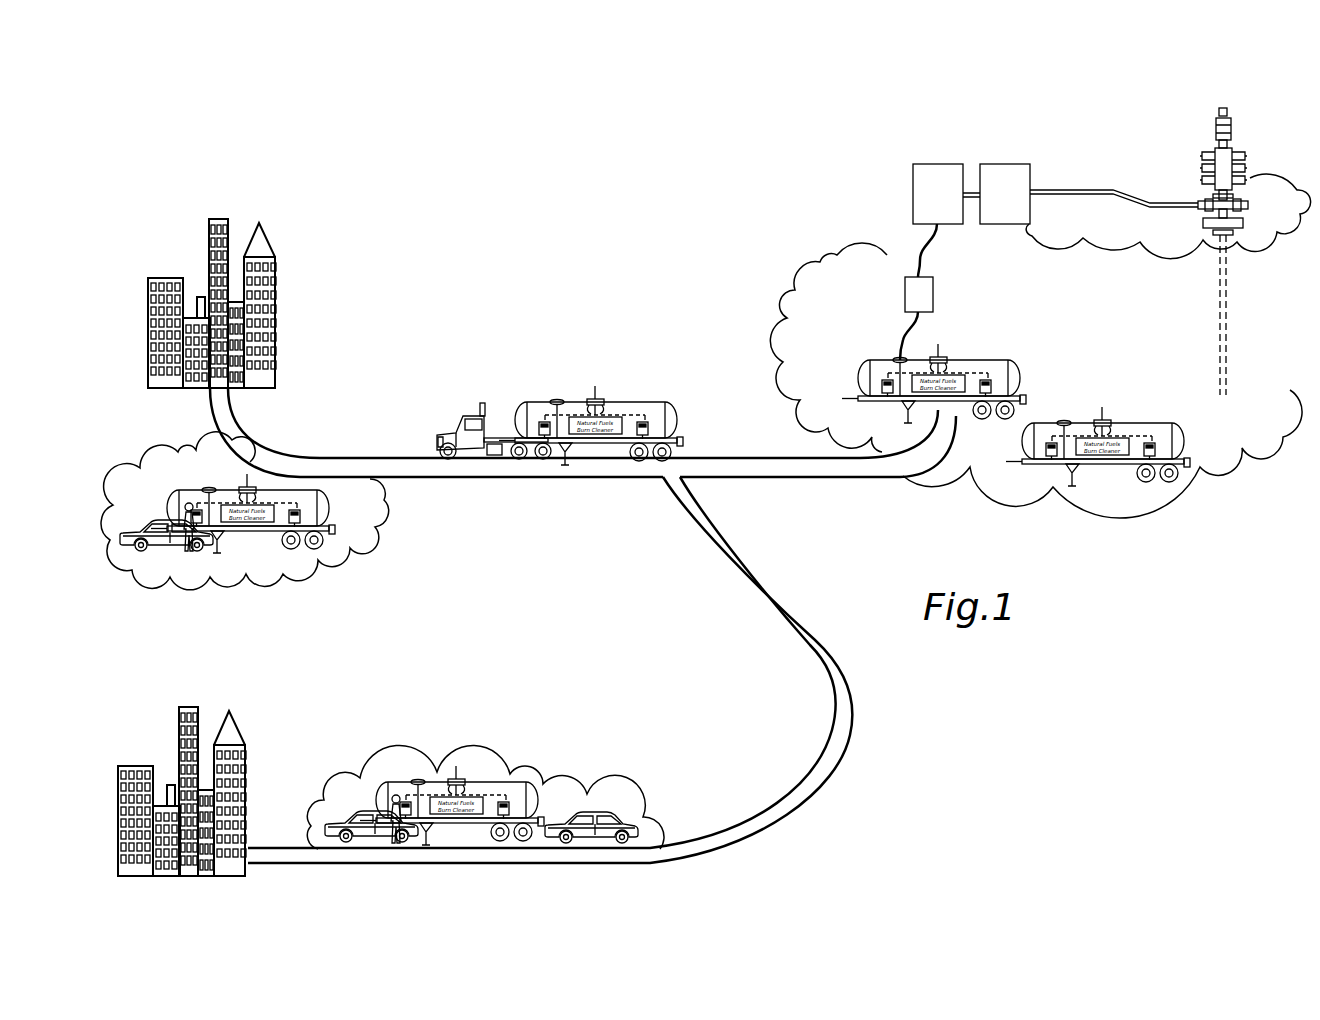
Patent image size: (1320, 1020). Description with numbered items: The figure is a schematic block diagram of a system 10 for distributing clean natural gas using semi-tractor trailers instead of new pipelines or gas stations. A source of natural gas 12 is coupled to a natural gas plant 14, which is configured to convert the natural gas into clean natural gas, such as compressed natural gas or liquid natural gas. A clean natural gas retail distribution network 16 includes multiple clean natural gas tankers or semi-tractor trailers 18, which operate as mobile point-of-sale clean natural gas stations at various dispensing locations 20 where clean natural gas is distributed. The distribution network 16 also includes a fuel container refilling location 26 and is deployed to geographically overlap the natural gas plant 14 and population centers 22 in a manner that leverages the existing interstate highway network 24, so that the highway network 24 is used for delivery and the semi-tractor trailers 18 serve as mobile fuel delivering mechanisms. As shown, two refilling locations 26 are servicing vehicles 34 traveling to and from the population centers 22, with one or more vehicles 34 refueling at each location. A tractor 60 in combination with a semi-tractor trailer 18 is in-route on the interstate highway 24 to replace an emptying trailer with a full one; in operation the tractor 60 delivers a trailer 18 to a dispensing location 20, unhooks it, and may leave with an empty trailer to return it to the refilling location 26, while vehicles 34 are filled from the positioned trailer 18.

The system for distributing clean natural gas 10 is at (488, 250).
The source of natural gas 12 is at (1226, 290).
The natural gas plant 14 is at (928, 204).
The clean natural gas retail distribution network 16 is at (928, 489).
The semi-tractor trailer 18 is at (620, 402).
The dispensing location 20 is at (264, 567).
The population center 22 is at (275, 316).
The interstate highway network 24 is at (421, 480).
The fuel container refilling location 26 is at (909, 304).
The vehicle 34 is at (135, 530).
The tractor 60 is at (476, 410).